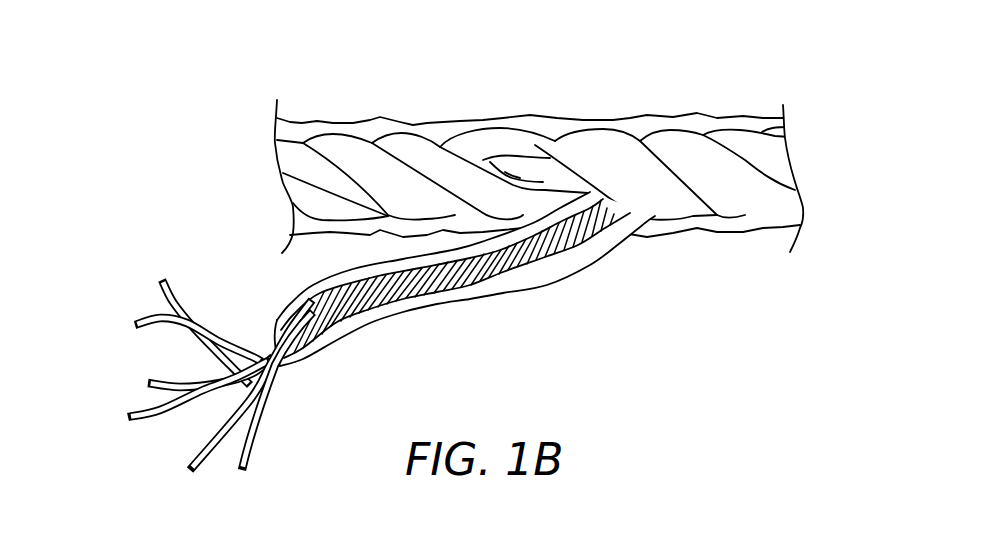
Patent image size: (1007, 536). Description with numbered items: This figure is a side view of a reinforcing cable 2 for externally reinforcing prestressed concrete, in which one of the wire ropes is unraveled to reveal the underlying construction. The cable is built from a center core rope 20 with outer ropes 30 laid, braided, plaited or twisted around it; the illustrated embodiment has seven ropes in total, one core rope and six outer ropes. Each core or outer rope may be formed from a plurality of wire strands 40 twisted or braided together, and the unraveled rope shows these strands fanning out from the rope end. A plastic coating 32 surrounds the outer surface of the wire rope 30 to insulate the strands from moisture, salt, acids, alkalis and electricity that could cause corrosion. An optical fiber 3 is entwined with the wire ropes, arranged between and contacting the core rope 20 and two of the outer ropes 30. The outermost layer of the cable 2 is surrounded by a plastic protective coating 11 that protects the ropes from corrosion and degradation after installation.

The reinforcing cable 2 is at (539, 192).
The optical fiber 3 is at (513, 177).
The plastic protective coating 11 is at (717, 117).
The core rope 20 is at (532, 165).
The outer rope 30 is at (409, 150).
The plastic coating 32 is at (450, 293).
The wire strands 40 is at (207, 448).